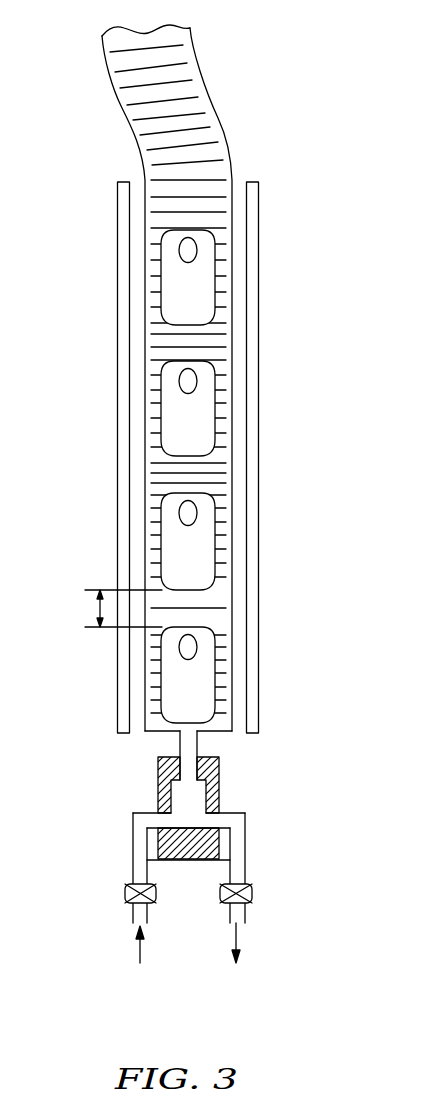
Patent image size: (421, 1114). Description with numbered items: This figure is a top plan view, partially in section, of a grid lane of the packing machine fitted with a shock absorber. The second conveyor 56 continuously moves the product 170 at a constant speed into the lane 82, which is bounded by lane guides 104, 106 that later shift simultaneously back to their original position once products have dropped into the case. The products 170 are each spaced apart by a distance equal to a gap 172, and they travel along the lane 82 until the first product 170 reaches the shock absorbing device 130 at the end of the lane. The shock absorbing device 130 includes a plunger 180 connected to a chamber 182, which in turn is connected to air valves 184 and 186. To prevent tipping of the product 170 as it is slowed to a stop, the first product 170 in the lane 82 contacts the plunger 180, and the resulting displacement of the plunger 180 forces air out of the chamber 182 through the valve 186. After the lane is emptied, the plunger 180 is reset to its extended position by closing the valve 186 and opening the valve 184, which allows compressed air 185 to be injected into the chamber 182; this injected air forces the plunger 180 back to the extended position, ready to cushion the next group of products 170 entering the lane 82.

The second conveyor 56 is at (193, 50).
The lane 82 is at (233, 124).
The lane guide 104 is at (260, 287).
The lane guide 106 is at (117, 218).
The shock absorbing device 130 is at (86, 815).
The product 170 is at (216, 251).
The gap 172 is at (98, 607).
The plunger 180 is at (180, 740).
The chamber 182 is at (195, 803).
The air valve 184 is at (125, 893).
The compressed air 185 is at (140, 950).
The air valve 186 is at (253, 893).